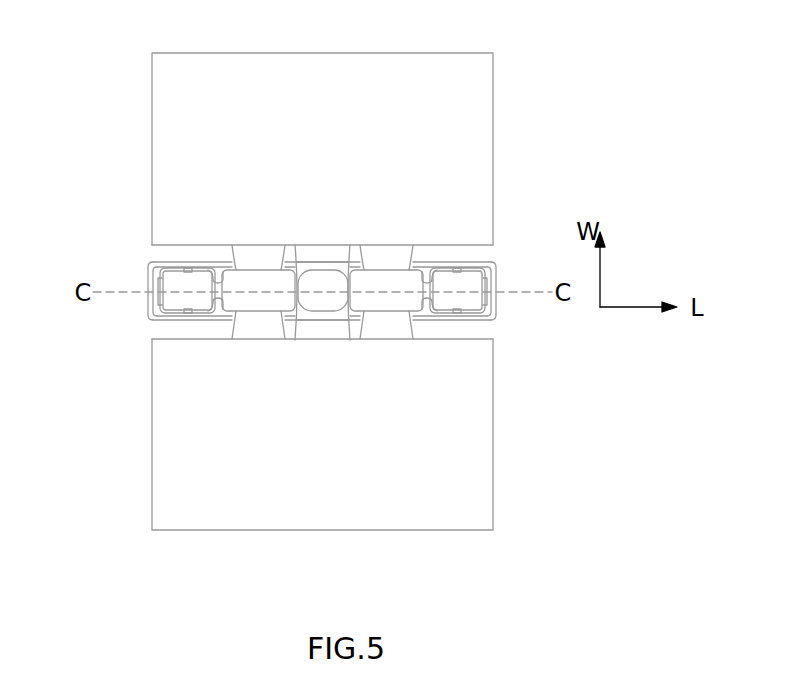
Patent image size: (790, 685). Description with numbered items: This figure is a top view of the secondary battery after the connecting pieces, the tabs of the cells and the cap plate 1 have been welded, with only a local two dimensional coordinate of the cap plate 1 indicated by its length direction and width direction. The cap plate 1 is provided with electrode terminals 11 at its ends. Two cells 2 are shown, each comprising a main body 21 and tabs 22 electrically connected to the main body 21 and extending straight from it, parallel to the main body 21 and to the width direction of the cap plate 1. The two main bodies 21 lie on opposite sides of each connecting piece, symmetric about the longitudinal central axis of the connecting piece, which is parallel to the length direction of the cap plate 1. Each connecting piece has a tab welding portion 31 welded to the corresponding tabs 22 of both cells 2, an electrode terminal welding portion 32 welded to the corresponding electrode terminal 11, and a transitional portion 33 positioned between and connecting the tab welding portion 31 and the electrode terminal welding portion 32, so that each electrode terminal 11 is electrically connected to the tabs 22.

The cap plate 1 is at (502, 307).
The electrode terminal 11 is at (160, 288).
The cell 2 is at (525, 147).
The main body 21 is at (402, 83).
The tab 22 is at (259, 265).
The tab welding portion 31 is at (268, 285).
The electrode terminal welding portion 32 is at (195, 285).
The transitional portion 33 is at (219, 300).